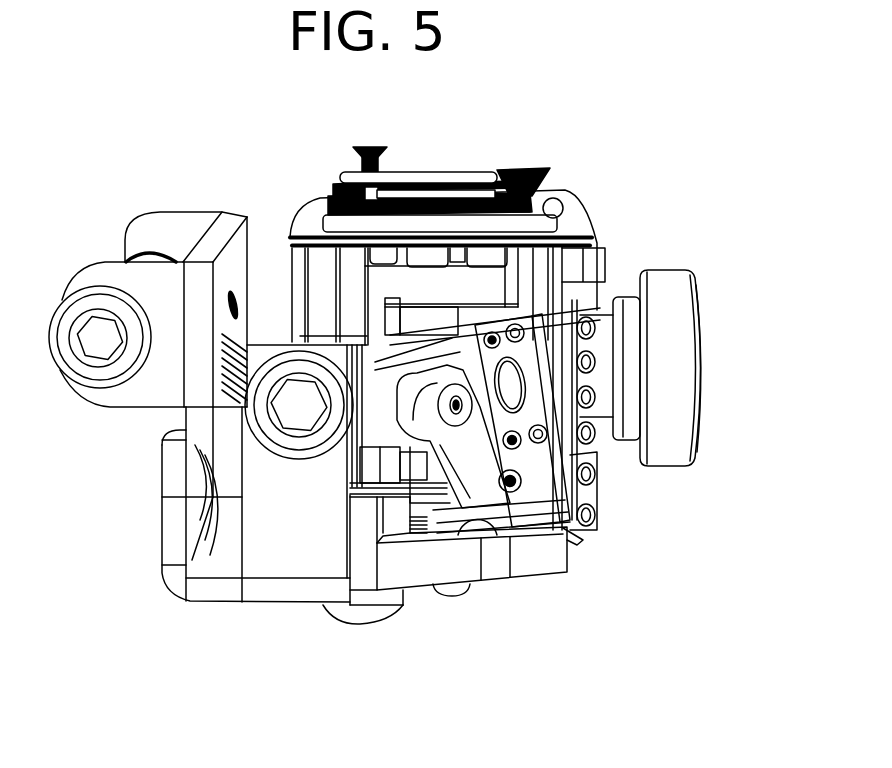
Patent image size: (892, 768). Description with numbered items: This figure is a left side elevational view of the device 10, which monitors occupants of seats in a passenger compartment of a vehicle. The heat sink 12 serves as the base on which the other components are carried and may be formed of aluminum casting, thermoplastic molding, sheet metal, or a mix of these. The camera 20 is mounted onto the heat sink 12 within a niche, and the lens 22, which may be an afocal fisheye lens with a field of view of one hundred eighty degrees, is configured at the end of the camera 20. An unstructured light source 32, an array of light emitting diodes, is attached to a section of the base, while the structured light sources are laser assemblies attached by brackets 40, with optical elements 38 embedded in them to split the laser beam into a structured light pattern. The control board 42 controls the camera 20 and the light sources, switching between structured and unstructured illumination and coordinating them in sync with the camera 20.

The device 10 is at (203, 150).
The heat sink 12 is at (566, 582).
The camera 20 is at (660, 453).
The lens 22 is at (705, 355).
The unstructured light source 32 is at (597, 468).
The optical elements 38 is at (507, 380).
The brackets 40 is at (457, 433).
The control board 42 is at (327, 198).